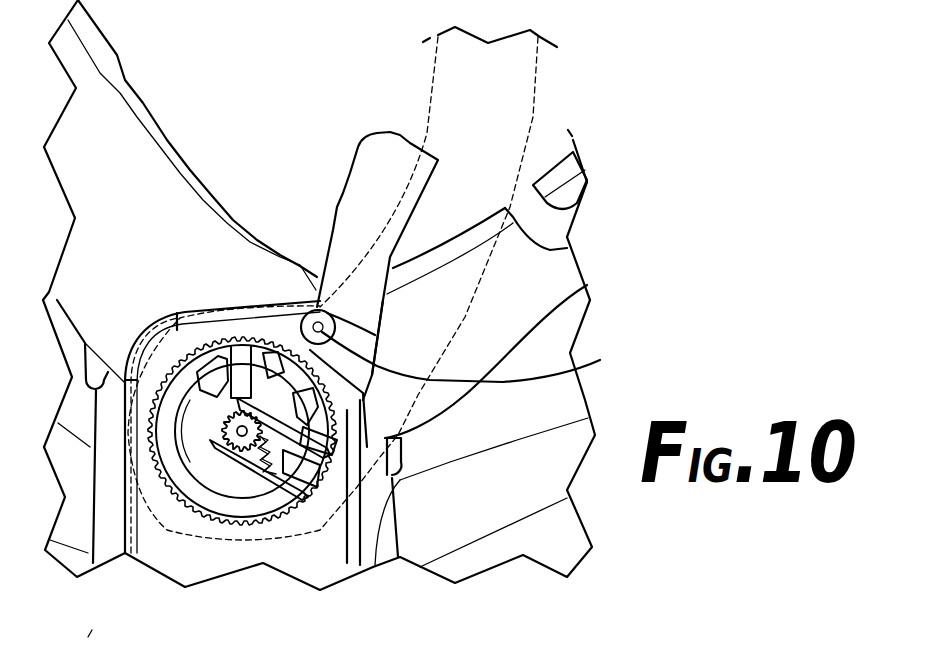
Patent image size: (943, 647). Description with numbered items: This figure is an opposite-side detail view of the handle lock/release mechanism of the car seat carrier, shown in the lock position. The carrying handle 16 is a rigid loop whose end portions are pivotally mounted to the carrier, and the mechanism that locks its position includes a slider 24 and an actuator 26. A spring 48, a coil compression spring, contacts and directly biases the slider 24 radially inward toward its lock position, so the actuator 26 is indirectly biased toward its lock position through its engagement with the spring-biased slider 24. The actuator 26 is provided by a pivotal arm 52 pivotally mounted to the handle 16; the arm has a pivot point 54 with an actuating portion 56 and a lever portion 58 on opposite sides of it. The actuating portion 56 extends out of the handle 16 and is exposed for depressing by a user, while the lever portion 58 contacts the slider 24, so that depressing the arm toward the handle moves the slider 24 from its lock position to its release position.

The carrying handle 16 is at (540, 79).
The slider 24 is at (240, 468).
The actuator 26 is at (447, 187).
The spring 48 is at (276, 432).
The pivotal arm 52 is at (382, 317).
The pivot point 54 is at (600, 360).
The actuating portion 56 is at (378, 148).
The lever portion 58 is at (352, 465).